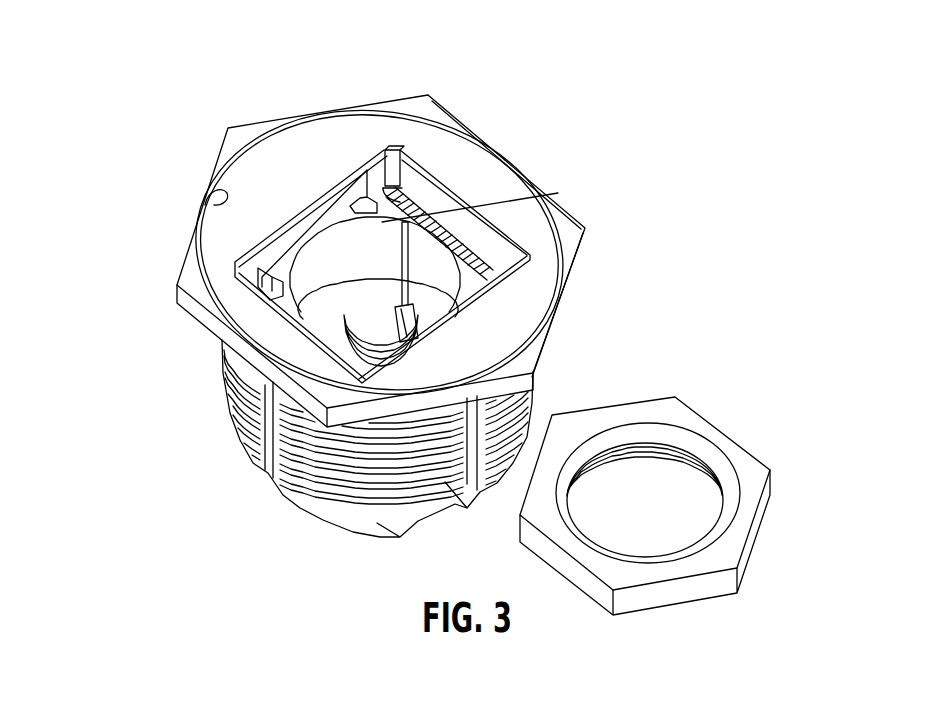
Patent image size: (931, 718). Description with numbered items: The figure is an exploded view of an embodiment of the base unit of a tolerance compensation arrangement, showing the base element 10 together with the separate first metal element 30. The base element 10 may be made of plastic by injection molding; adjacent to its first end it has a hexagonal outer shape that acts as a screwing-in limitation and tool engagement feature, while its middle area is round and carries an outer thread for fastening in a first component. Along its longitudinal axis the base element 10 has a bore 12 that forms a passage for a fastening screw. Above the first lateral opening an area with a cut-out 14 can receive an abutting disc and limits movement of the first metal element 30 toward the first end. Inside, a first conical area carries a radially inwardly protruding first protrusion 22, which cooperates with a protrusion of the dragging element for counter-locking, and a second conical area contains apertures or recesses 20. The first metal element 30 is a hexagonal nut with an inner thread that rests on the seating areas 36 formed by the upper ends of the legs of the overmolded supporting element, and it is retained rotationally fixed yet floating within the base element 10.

The base element 10 is at (290, 488).
The bore 12 is at (357, 258).
The cut-out 14 is at (206, 205).
The apertures or recesses 20 is at (348, 327).
The first protrusion 22 is at (408, 278).
The first metal element 30 is at (683, 402).
The seating areas 36 is at (432, 218).